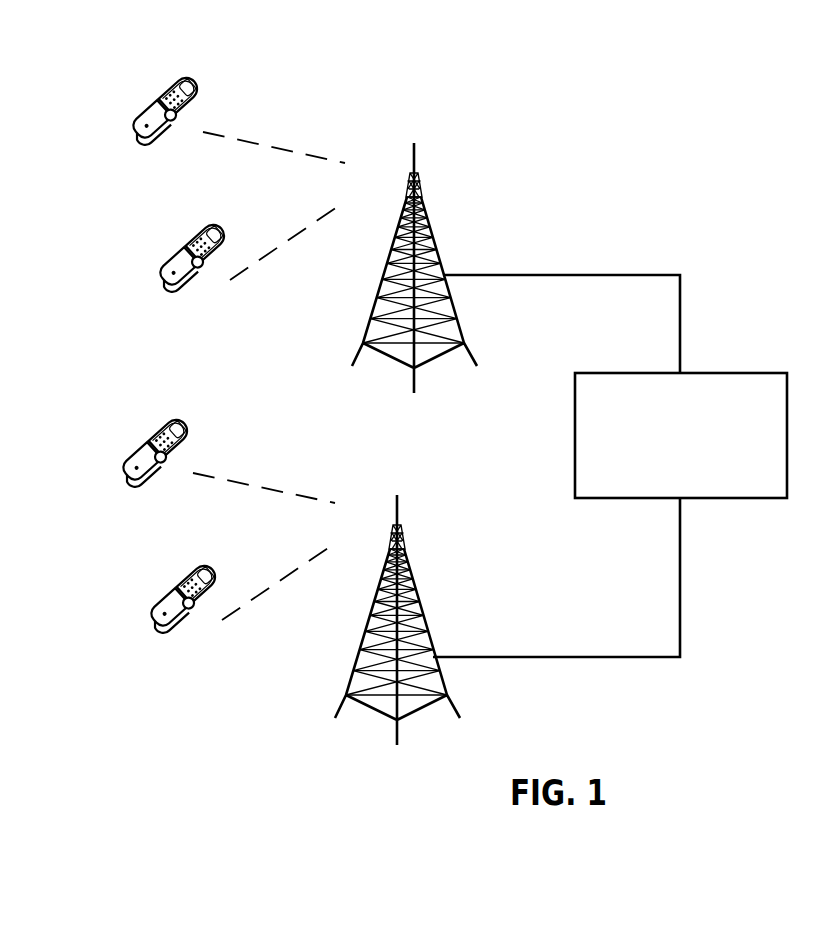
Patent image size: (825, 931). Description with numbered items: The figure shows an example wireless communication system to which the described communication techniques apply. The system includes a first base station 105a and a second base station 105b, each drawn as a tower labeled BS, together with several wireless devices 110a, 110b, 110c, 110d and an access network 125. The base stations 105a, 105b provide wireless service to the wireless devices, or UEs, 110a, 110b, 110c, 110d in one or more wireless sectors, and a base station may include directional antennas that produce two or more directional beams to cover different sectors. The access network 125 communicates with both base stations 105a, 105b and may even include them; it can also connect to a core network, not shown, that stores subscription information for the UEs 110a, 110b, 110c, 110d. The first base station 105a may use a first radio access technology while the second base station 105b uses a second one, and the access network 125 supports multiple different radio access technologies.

The base station 105a is at (425, 223).
The base station 105b is at (407, 545).
The wireless device 110a is at (142, 82).
The wireless device 110b is at (170, 231).
The wireless device 110c is at (134, 422).
The wireless device 110d is at (163, 571).
The access network 125 is at (583, 373).